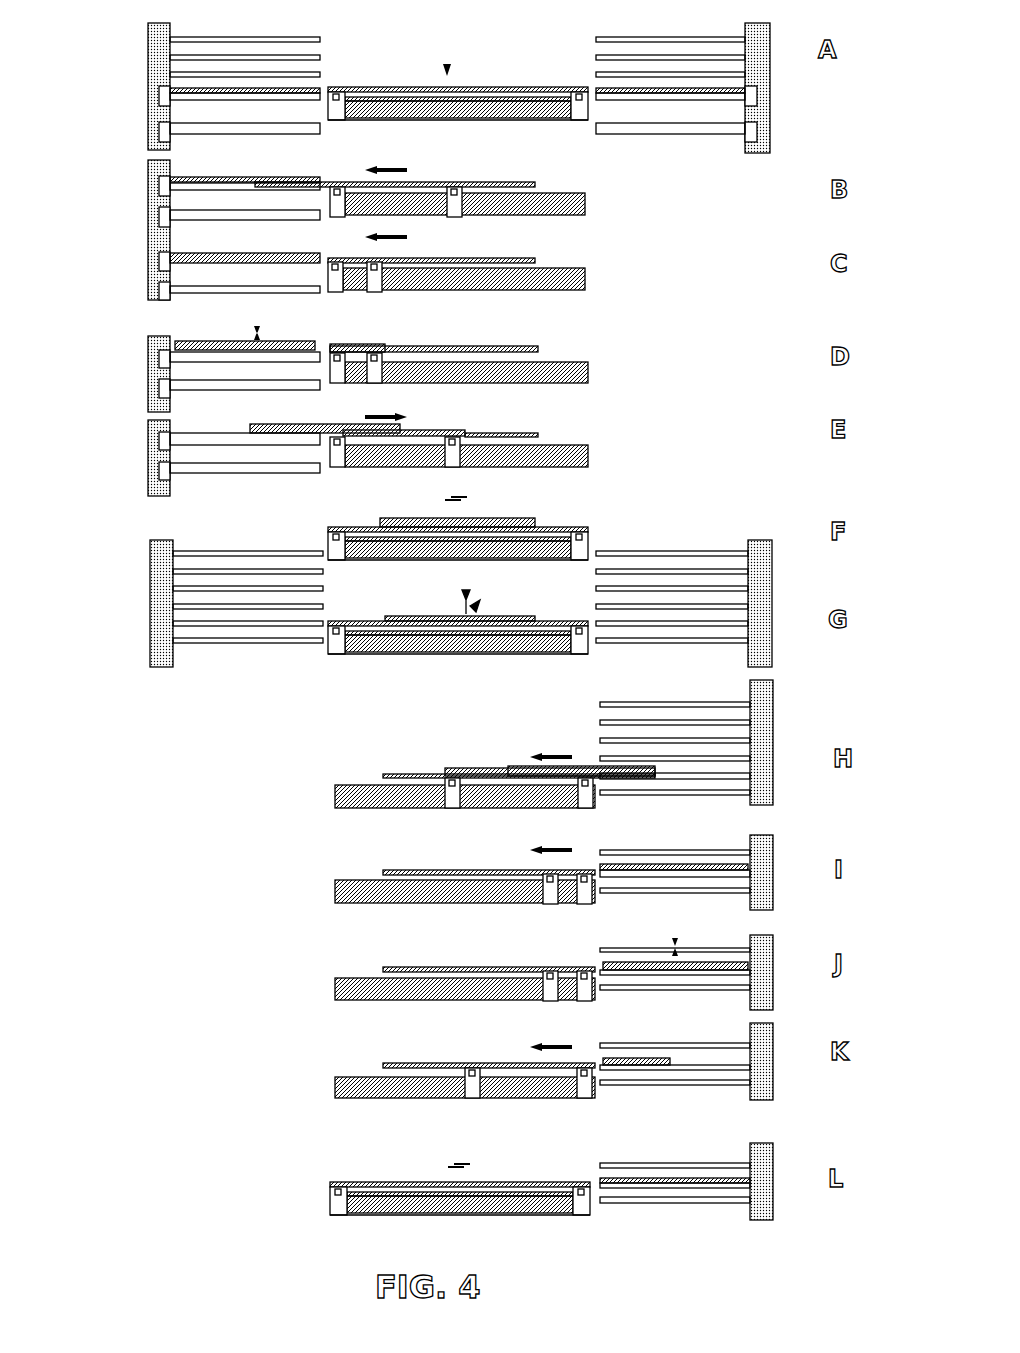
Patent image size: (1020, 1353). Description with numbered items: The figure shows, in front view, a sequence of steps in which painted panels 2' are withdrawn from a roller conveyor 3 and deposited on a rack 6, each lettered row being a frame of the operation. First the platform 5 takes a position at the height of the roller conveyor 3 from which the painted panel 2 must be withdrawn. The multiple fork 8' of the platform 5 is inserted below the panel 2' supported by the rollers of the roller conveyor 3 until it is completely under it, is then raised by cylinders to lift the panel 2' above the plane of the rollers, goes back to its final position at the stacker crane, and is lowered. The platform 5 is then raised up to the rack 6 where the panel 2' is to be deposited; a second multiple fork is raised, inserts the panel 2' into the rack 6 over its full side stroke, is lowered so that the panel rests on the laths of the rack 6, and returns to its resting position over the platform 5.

The painted panel 2 is at (394, 457).
The painted panel 2' is at (460, 602).
The roller conveyor 3 is at (195, 97).
The platform 5 is at (455, 100).
The rack 6 is at (708, 60).
The multiple fork 8' is at (404, 161).